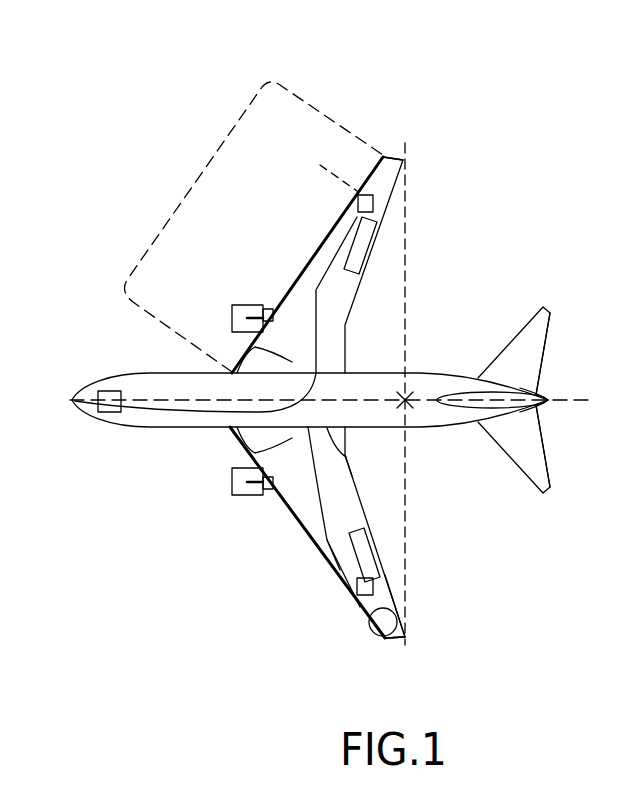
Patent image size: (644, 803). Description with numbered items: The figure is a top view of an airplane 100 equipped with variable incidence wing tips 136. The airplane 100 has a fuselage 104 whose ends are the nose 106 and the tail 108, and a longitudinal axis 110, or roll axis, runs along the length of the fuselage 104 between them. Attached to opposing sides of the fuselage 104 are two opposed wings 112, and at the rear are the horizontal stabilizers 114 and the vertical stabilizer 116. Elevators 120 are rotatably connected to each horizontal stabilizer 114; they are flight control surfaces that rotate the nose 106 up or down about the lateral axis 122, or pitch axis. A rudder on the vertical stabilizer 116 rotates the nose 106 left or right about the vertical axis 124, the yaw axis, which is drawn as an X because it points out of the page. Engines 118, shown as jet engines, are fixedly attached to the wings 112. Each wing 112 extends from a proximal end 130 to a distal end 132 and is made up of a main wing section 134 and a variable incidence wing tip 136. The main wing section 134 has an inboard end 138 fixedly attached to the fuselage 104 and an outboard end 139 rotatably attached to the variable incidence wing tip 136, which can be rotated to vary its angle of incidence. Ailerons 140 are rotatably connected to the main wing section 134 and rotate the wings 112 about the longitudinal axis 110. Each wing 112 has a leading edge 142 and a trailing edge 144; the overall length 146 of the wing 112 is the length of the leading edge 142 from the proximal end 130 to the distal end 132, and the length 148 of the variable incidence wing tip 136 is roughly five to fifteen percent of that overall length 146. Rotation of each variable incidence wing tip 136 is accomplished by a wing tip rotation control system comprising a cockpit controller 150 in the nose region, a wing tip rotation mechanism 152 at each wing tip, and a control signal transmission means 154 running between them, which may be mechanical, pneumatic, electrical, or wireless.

The airplane 100 is at (482, 216).
The fuselage 104 is at (165, 418).
The nose 106 is at (80, 398).
The tail 108 is at (549, 398).
The longitudinal axis 110 is at (570, 402).
The wing 112 is at (297, 300).
The horizontal stabilizer 114 is at (550, 298).
The vertical stabilizer 116 is at (482, 403).
The engine 118 is at (241, 317).
The elevator 120 is at (538, 348).
The lateral axis 122 is at (407, 534).
The vertical axis 124 is at (408, 393).
The proximal end 130 is at (338, 438).
The distal end 132 is at (405, 642).
The main wing section 134 is at (315, 272).
The variable incidence wing tip 136 is at (386, 168).
The inboard end 138 is at (347, 463).
The outboard end 139 is at (368, 622).
The aileron 140 is at (363, 247).
The leading edge 142 is at (323, 552).
The trailing edge 144 is at (395, 590).
The overall length 146 is at (203, 167).
The length 148 is at (330, 173).
The cockpit controller 150 is at (108, 401).
The wing tip rotation mechanism 152 is at (377, 205).
The control signal transmission means 154 is at (318, 344).